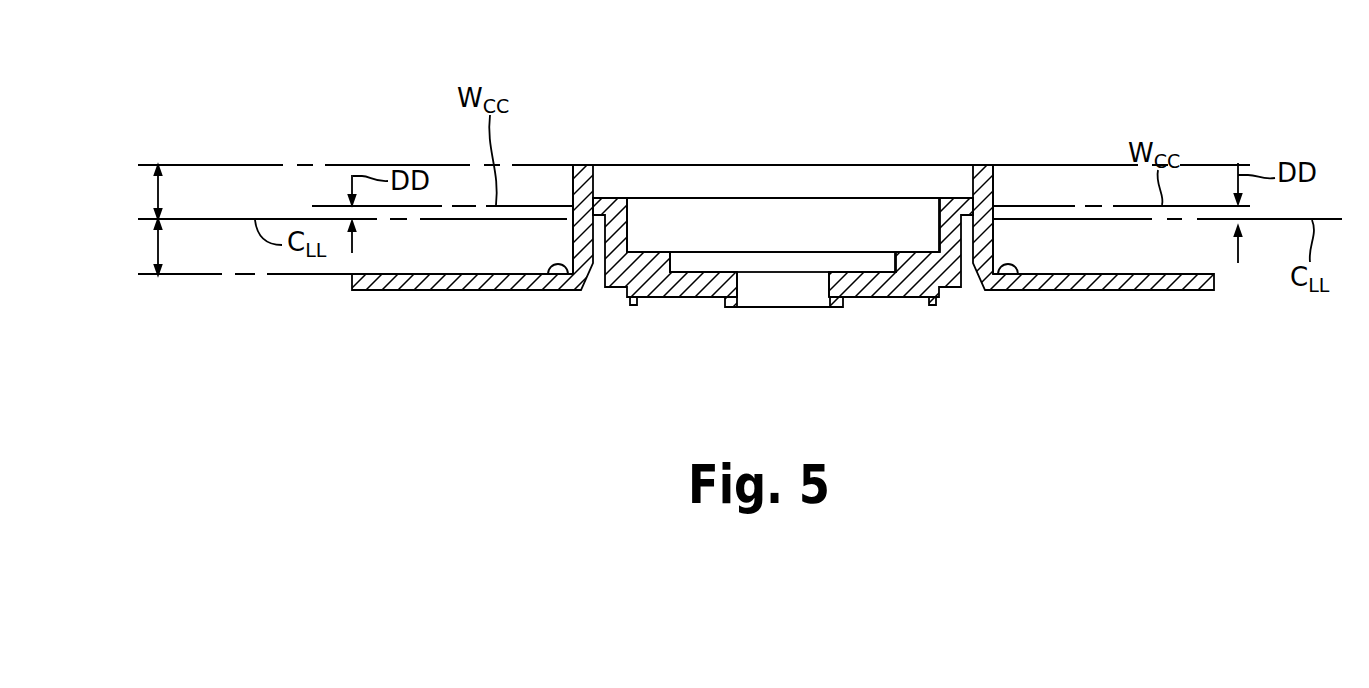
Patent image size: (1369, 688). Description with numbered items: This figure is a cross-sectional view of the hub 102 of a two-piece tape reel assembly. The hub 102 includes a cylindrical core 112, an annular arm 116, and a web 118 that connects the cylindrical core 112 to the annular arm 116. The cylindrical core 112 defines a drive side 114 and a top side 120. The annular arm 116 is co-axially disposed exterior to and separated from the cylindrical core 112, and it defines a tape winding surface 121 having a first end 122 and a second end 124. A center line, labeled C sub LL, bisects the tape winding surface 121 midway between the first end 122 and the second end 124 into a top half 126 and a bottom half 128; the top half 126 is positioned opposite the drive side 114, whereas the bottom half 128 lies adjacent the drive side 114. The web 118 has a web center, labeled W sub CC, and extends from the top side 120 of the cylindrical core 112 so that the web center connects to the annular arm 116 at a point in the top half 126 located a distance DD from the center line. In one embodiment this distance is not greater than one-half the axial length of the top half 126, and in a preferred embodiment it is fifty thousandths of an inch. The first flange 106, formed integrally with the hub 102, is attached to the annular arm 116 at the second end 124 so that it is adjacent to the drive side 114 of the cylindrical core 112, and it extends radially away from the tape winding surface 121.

The hub 102 is at (731, 88).
The first flange 106 is at (363, 290).
The cylindrical core 112 is at (767, 282).
The drive side 114 is at (683, 297).
The annular arm 116 is at (588, 164).
The web 118 is at (623, 197).
The top side 120 is at (631, 192).
The tape winding surface 121 is at (572, 247).
The first end 122 is at (587, 165).
The second end 124 is at (538, 290).
The top half 126 is at (157, 192).
The bottom half 128 is at (157, 246).